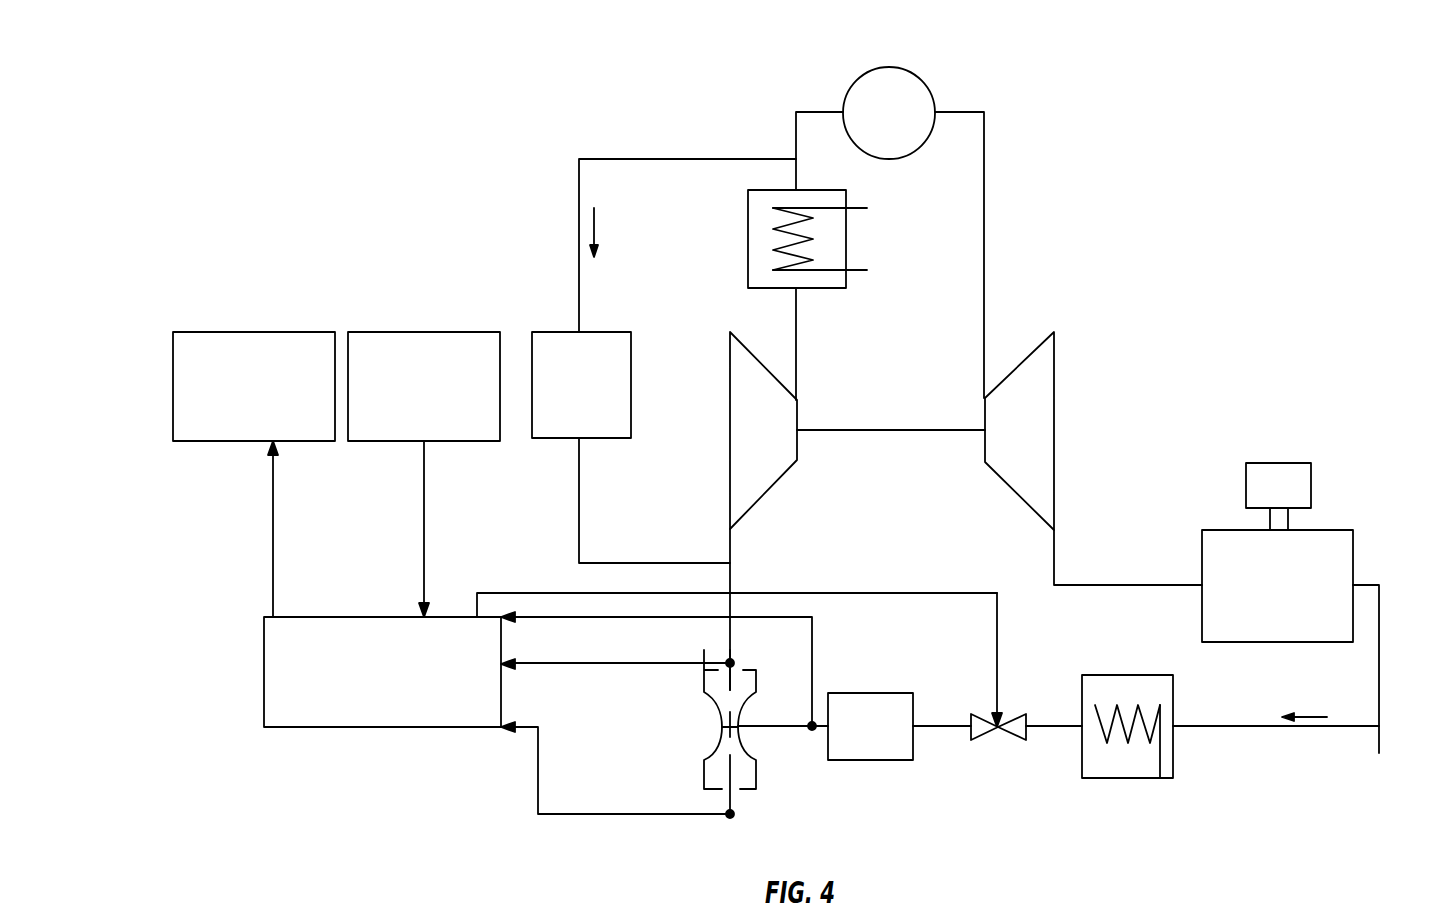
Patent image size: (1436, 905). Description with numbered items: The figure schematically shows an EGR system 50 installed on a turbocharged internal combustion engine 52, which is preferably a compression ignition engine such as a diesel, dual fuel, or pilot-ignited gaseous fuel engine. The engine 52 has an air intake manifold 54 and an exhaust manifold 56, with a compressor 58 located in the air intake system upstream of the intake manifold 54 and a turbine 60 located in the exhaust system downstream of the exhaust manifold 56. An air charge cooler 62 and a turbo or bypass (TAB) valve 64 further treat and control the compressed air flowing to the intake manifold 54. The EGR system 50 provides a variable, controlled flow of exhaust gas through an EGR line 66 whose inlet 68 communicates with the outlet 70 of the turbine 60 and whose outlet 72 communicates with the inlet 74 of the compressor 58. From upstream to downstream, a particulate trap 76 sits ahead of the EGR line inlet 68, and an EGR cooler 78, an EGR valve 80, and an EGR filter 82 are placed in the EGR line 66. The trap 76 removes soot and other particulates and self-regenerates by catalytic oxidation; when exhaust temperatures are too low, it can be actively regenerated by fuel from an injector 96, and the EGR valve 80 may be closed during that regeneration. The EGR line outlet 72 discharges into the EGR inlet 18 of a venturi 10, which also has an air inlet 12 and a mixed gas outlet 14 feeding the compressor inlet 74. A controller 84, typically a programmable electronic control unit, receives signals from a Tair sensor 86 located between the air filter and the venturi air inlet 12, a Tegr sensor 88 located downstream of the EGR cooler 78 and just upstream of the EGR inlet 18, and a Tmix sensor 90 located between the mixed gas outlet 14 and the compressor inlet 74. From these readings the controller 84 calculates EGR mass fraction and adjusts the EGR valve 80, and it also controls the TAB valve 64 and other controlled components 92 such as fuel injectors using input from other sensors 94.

The venturi 10 is at (708, 700).
The air inlet 12 is at (730, 803).
The mixed gas outlet 14 is at (752, 668).
The EGR inlet 18 is at (720, 727).
The EGR system 50 is at (1018, 757).
The internal combustion engine 52 is at (893, 62).
The air intake manifold 54 is at (843, 103).
The exhaust manifold 56 is at (935, 103).
The compressor 58 is at (797, 411).
The turbine 60 is at (1054, 392).
The air charge cooler 62 is at (748, 238).
The turbo or bypass (TAB) valve 64 is at (631, 387).
The EGR line 66 is at (1252, 726).
The EGR line inlet 68 is at (1367, 726).
The turbine outlet 70 is at (1054, 530).
The EGR line outlet 72 is at (743, 728).
The compressor inlet 74 is at (728, 530).
The particulate trap 76 is at (1353, 545).
The EGR cooler 78 is at (1173, 693).
The EGR valve 80 is at (1008, 713).
The EGR filter 82 is at (913, 702).
The controller 84 is at (290, 617).
The Tair sensor 86 is at (730, 818).
The Tegr sensor 88 is at (812, 730).
The Tmix sensor 90 is at (730, 660).
The other controlled components 92 is at (253, 332).
The other sensors 94 is at (424, 332).
The injector 96 is at (1279, 463).